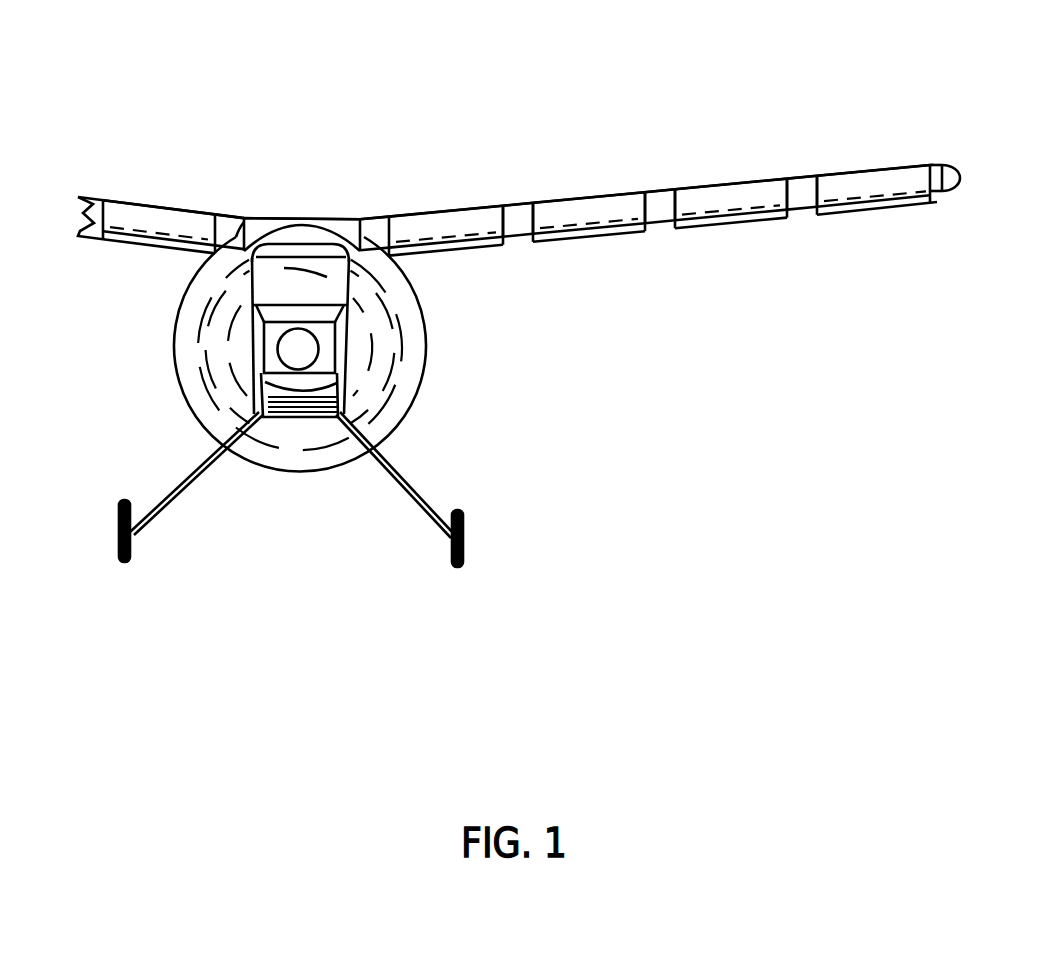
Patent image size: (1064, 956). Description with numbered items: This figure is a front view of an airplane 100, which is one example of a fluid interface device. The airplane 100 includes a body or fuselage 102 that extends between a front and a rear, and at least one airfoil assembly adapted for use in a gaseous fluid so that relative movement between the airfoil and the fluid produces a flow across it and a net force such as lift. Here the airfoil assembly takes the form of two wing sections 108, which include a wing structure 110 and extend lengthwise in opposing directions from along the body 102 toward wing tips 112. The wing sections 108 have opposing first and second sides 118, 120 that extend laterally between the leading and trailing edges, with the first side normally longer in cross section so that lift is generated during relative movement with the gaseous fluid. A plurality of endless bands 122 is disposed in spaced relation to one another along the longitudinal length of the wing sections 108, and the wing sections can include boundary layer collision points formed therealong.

The airplane 100 is at (505, 106).
The body or fuselage 102 is at (247, 282).
The wing sections 108 is at (88, 178).
The wing structure 110 is at (521, 232).
The wing tips 112 is at (958, 164).
The first side 118 is at (797, 176).
The second side 120 is at (662, 226).
The endless bands 122 is at (170, 203).